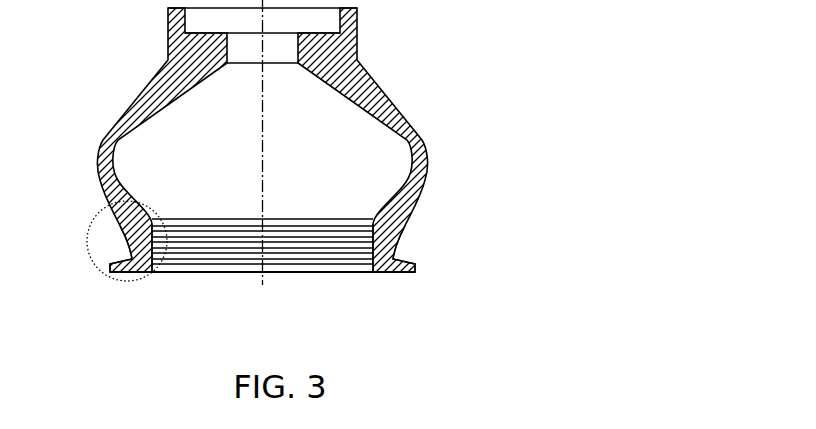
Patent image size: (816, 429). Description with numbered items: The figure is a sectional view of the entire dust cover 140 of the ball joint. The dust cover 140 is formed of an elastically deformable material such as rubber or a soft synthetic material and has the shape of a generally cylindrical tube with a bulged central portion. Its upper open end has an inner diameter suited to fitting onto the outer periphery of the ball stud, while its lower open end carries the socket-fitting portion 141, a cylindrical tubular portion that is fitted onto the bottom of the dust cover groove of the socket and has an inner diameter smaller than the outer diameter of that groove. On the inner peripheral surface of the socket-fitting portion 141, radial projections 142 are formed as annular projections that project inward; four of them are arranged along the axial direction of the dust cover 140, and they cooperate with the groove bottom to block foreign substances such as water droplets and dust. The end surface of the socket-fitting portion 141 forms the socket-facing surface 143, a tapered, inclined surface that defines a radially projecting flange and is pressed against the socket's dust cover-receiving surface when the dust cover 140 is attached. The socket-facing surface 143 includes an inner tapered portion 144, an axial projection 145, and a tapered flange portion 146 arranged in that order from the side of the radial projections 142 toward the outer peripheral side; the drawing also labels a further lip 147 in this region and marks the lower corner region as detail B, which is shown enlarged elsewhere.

The dust cover 140 is at (105, 51).
The socket-fitting portion 141 is at (396, 241).
The radial projections 142 is at (366, 222).
The socket-facing surface 143 is at (468, 276).
The inner tapered portion 144 is at (378, 272).
The axial projection 145 is at (383, 272).
The tapered flange portion 146 is at (393, 272).
The fourth seal lip 147 is at (388, 272).
The detail region B is at (86, 240).